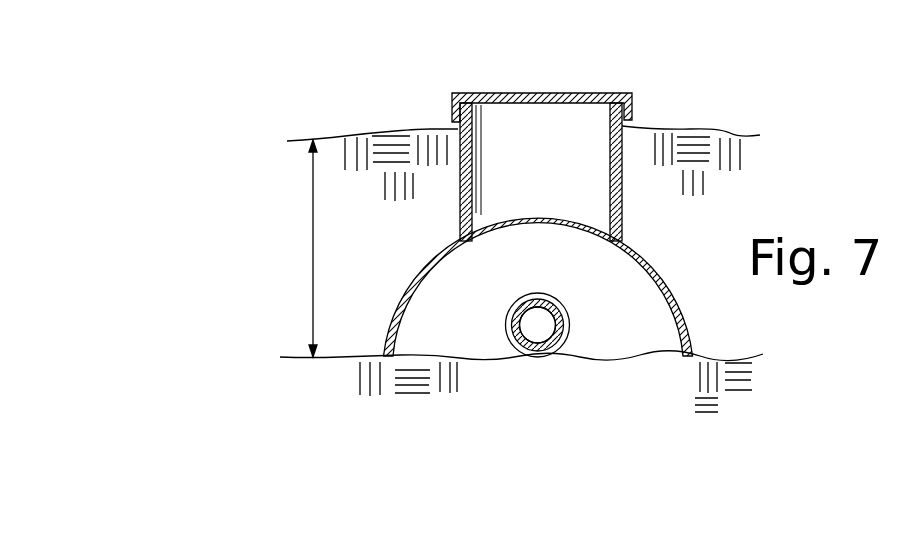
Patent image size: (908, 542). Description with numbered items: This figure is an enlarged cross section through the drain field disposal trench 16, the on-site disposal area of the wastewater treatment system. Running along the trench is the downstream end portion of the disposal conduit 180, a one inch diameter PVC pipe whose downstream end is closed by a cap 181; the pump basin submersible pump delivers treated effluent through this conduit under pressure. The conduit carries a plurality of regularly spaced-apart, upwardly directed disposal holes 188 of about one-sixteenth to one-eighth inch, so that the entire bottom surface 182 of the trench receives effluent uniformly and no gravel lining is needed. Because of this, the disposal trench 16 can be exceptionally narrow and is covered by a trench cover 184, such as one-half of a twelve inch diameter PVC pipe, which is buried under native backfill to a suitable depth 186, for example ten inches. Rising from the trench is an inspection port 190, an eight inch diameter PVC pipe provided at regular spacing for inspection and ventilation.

The drain field disposal trench 16 is at (561, 82).
The inspection port 190 is at (637, 127).
The trench cover 184 is at (652, 252).
The depth 186 is at (313, 225).
The disposal holes 188 is at (538, 299).
The cap 181 is at (569, 318).
The disposal conduit 180 is at (565, 333).
The bottom surface 182 is at (475, 357).